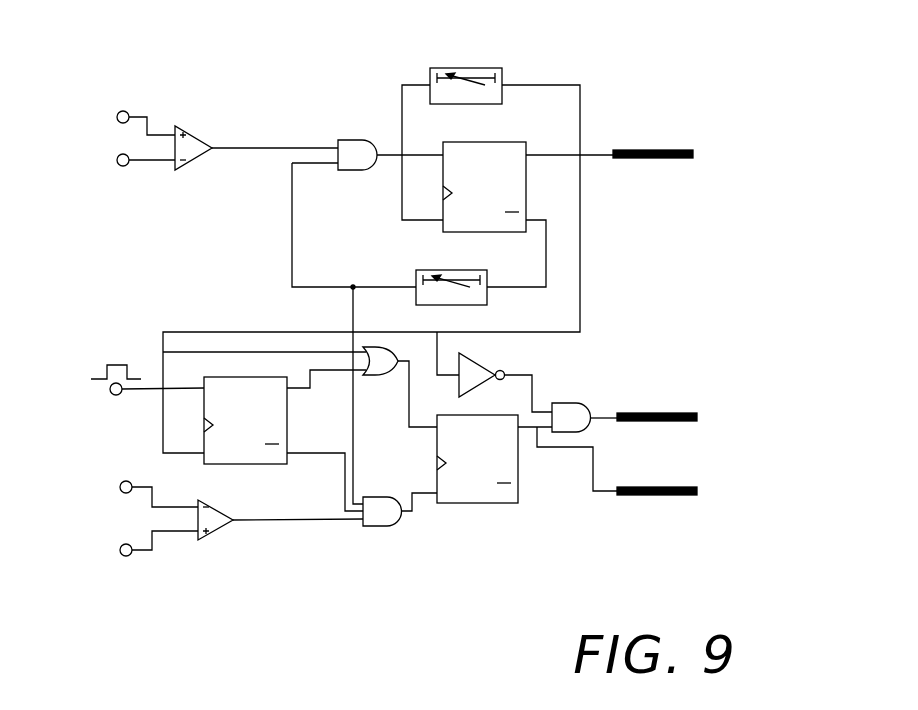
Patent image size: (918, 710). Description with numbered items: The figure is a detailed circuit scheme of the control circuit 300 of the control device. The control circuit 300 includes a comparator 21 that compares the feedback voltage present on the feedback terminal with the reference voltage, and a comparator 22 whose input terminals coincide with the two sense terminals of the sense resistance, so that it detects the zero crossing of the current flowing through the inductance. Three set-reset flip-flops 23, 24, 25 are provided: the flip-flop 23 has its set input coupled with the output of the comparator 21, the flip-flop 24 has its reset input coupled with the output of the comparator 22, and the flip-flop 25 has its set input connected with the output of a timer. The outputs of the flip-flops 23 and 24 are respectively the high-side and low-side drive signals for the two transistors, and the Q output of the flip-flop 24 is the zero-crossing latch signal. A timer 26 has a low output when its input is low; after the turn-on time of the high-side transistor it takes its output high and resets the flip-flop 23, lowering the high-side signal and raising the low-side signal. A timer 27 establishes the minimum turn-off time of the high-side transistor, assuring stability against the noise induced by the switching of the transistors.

The control circuit 300 is at (329, 114).
The comparator 21 is at (190, 146).
The comparator 22 is at (245, 521).
The set-reset flip-flop 23 is at (516, 142).
The set-reset flip-flop 24 is at (506, 461).
The set-reset flip-flop 25 is at (258, 377).
The timer 26 is at (500, 69).
The timer 27 is at (478, 290).